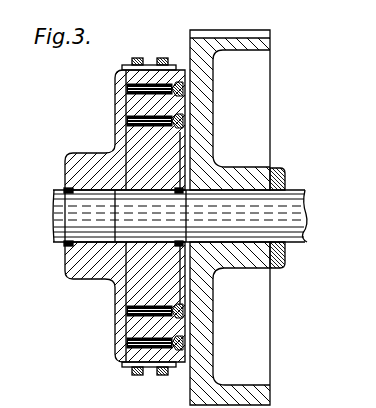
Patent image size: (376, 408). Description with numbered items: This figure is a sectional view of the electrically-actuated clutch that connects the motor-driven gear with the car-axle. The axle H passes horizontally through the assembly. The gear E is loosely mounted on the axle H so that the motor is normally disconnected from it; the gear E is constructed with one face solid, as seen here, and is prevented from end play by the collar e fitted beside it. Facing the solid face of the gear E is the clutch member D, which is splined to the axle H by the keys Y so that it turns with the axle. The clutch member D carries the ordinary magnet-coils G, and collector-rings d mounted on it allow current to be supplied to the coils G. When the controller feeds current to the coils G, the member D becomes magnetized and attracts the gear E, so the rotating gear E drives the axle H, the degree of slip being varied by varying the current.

The electrically-actuated clutch D is at (133, 143).
The magnet-coils G is at (127, 88).
The gear E is at (200, 112).
The collar e is at (285, 176).
The axle H is at (85, 203).
The keys Y is at (66, 191).
The collector-rings d is at (149, 206).